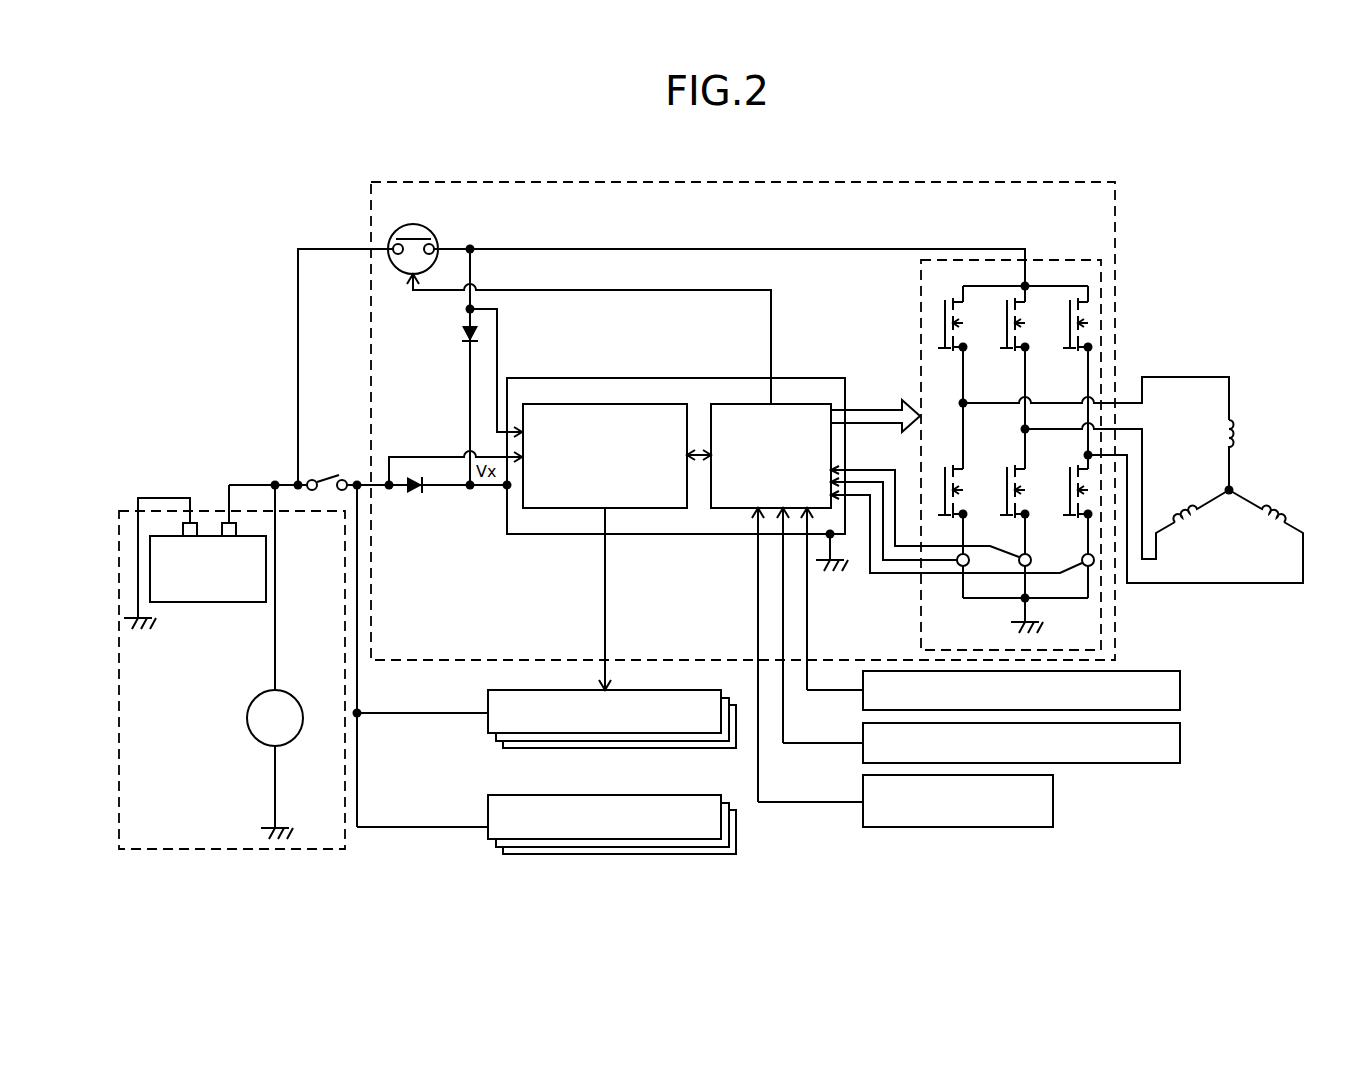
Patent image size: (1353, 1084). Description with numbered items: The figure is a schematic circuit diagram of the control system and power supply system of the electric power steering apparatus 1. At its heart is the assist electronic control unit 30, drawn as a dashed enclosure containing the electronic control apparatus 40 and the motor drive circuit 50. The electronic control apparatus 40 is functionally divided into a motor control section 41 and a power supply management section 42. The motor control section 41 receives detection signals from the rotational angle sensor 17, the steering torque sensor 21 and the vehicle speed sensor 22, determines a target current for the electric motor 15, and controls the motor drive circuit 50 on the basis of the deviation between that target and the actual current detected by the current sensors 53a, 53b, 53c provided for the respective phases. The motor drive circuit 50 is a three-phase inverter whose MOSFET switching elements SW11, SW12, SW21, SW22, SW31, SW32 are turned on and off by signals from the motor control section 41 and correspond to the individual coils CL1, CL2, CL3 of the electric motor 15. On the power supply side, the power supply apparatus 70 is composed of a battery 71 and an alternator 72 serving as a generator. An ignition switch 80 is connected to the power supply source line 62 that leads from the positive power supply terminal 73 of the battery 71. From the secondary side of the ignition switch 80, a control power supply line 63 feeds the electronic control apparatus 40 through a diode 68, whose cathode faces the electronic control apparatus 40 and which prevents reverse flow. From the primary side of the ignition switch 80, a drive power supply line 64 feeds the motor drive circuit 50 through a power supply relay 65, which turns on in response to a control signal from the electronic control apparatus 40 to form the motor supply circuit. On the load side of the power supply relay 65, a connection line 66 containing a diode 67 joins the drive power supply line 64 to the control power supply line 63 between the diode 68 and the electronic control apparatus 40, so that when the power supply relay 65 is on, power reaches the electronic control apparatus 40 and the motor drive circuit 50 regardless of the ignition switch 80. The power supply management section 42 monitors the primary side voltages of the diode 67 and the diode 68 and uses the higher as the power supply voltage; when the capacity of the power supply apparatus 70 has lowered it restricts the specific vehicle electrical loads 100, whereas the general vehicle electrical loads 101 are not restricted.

The electric power steering apparatus 1 is at (1162, 244).
The electric motor 15 is at (1203, 351).
The rotational angle sensor 17 is at (1053, 802).
The steering torque sensor 21 is at (1180, 743).
The vehicle speed sensor 22 is at (1180, 690).
The assist electronic control unit 30 is at (890, 182).
The electronic control apparatus 40 is at (775, 380).
The motor control section 41 is at (780, 405).
The power supply management section 42 is at (640, 405).
The motor drive circuit 50 is at (1050, 260).
The current sensor 53a is at (960, 567).
The current sensor 53b is at (1031, 556).
The current sensor 53c is at (1093, 566).
The power supply source line 62 is at (260, 482).
The control power supply line 63 is at (436, 490).
The drive power supply line 64 is at (607, 248).
The power supply relay 65 is at (413, 224).
The connection line 66 is at (470, 402).
The diode 67 is at (462, 335).
The diode 68 is at (412, 496).
The power supply apparatus 70 is at (243, 852).
The battery 71 is at (192, 603).
The alternator 72 is at (297, 694).
The power supply terminal 73 is at (223, 516).
The ignition switch 80 is at (328, 478).
The specific vehicle electrical loads 100 is at (660, 690).
The general vehicle electrical loads 101 is at (660, 795).
The coil CL1 is at (1237, 432).
The coil CL2 is at (1185, 527).
The coil CL3 is at (1280, 527).
The switching element SW11 is at (945, 322).
The switching element SW12 is at (945, 490).
The switching element SW21 is at (1007, 324).
The switching element SW22 is at (1007, 490).
The switching element SW31 is at (1070, 324).
The switching element SW32 is at (1070, 490).